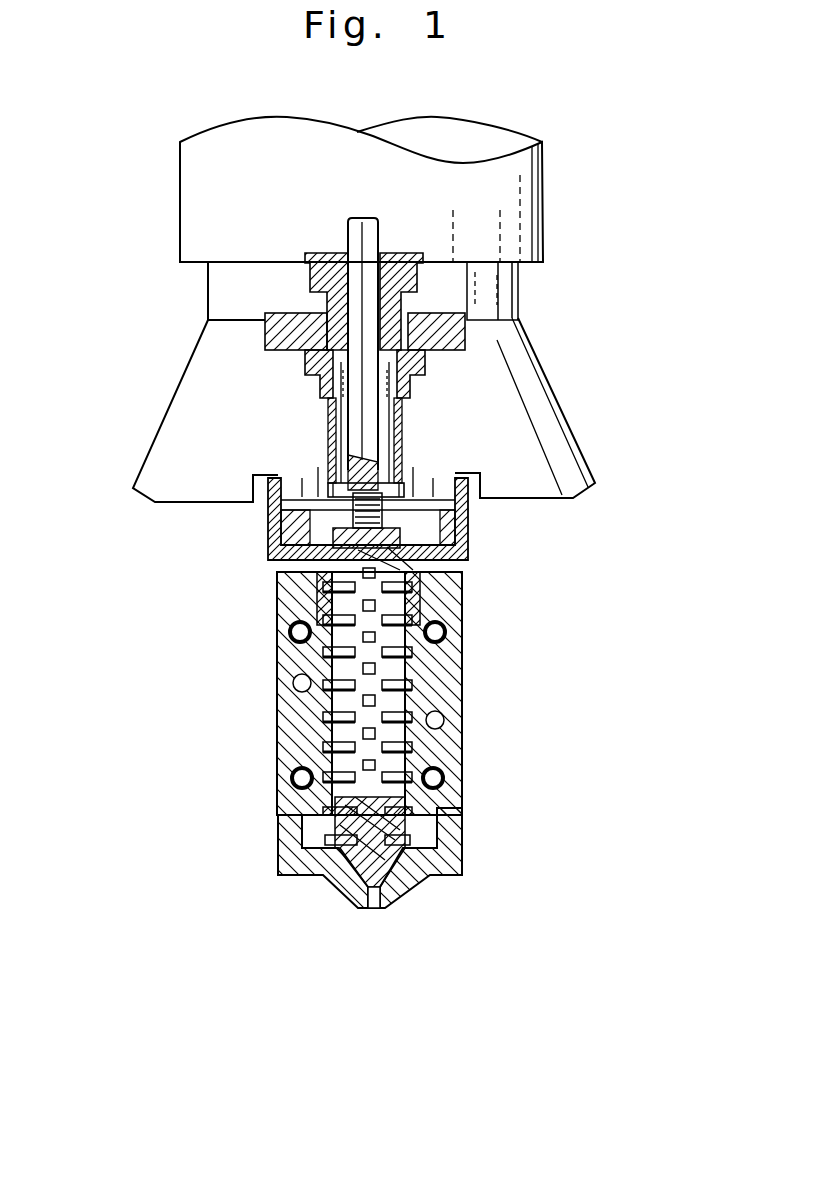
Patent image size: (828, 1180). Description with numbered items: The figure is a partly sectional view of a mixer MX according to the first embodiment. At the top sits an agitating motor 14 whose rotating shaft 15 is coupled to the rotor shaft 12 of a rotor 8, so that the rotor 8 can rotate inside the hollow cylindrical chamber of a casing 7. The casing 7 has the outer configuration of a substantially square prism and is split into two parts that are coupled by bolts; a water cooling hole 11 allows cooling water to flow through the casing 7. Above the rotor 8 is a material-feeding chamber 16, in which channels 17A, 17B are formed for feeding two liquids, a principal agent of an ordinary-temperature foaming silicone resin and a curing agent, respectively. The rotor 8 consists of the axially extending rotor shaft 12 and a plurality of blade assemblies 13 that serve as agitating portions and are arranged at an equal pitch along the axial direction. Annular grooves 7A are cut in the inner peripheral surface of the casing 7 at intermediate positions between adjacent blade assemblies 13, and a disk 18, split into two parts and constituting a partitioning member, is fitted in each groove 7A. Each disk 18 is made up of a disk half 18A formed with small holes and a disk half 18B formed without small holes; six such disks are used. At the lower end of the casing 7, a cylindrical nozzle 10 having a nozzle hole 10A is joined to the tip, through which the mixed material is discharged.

The mixer MX is at (583, 146).
The agitating motor 14 is at (547, 202).
The rotating shaft 15 is at (383, 418).
The channel 17A is at (313, 482).
The channel 17B is at (422, 490).
The material-feeding chamber 16 is at (313, 528).
The rotor 8 is at (403, 533).
The rotor shaft 12 is at (410, 568).
The casing 7 is at (447, 652).
The water cooling hole 11 is at (445, 718).
The disk 18 is at (190, 785).
The disk half 18A is at (327, 652).
The disk half 18B is at (413, 648).
The blade assembly 13 is at (337, 733).
The annular groove 7A is at (410, 747).
The nozzle 10 is at (463, 847).
The nozzle hole 10A is at (372, 912).